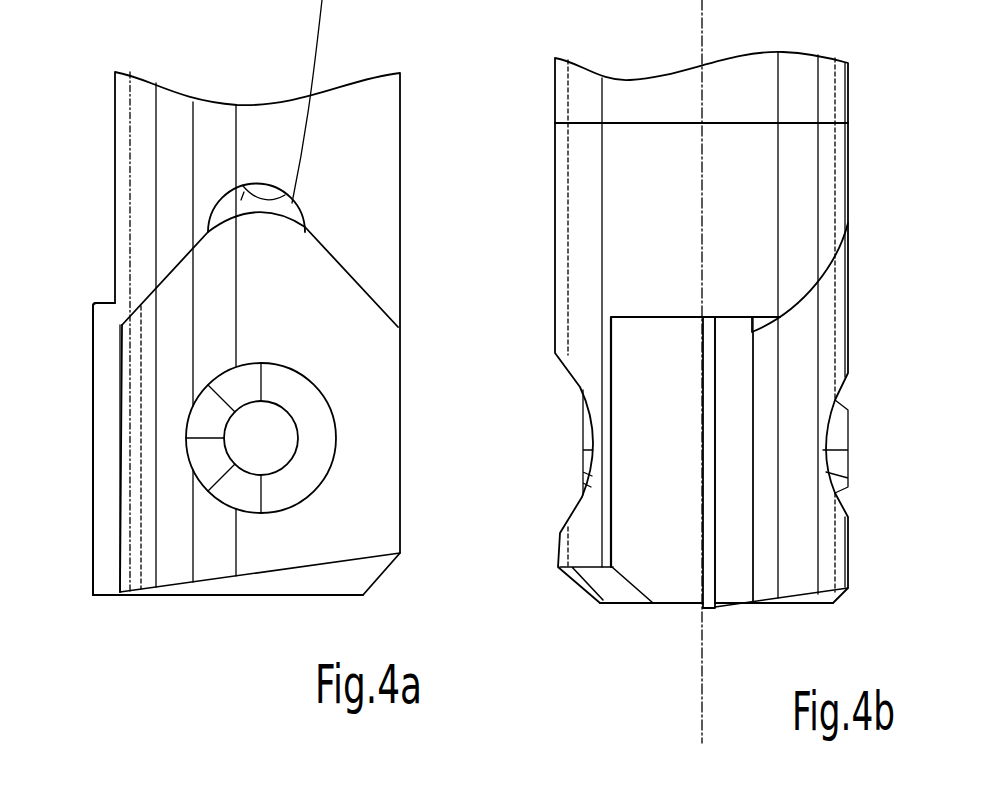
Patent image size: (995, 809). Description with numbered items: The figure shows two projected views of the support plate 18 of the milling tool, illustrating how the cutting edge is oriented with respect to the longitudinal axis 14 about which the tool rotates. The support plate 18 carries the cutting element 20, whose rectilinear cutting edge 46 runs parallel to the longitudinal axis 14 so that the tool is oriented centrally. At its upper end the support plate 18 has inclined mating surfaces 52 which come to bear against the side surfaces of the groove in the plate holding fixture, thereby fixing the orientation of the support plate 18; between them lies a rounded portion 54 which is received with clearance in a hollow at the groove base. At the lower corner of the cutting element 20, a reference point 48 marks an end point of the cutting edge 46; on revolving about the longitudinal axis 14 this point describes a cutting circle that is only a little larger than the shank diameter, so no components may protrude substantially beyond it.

In FIG. 4B, the longitudinal axis 14 is at (707, 697).
In FIG. 4A, the support plate 18 is at (320, 512).
In FIG. 4A, the cutting element 20 is at (108, 543).
In FIG. 4B, the cutting element 20 is at (733, 568).
In FIG. 4A, the cutting edge 46 is at (92, 337).
In FIG. 4B, the cutting edge 46 is at (702, 467).
In FIG. 4A, the reference point 48 is at (97, 597).
In FIG. 4B, the reference point 48 is at (703, 607).
In FIG. 4A, the mating surfaces 52 is at (337, 257).
In FIG. 4A, the rounded portion 54 is at (293, 205).